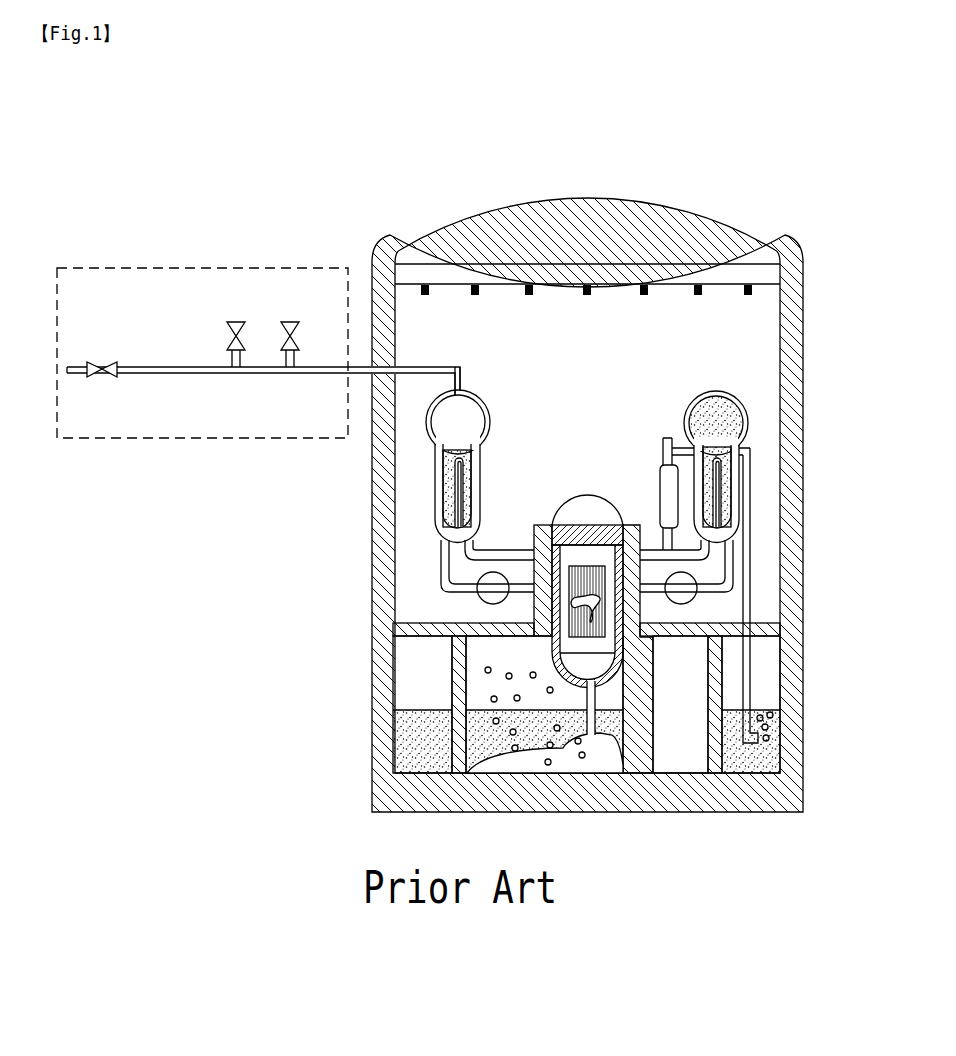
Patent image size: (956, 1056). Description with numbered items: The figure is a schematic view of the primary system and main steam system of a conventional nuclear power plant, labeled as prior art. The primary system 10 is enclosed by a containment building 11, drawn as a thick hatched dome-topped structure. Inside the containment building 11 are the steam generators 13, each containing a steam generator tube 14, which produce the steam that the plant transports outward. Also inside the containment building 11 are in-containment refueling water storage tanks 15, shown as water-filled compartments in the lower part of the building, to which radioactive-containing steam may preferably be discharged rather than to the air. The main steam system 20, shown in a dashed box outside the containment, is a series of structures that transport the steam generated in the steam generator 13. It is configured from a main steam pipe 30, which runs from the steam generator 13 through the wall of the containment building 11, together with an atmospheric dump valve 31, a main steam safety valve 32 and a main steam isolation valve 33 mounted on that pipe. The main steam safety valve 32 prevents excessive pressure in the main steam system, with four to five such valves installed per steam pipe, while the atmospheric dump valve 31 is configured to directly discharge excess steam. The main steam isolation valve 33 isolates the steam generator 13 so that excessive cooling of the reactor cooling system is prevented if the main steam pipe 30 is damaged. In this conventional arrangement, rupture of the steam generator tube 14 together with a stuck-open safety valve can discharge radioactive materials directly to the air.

The primary system 10 is at (770, 141).
The containment building 11 is at (670, 200).
The steam generator 13 is at (471, 400).
The steam generator tube 14 is at (466, 467).
The in-containment refueling water storage tank 15 is at (414, 681).
The main steam system 20 is at (98, 242).
The main steam pipe 30 is at (325, 375).
The atmospheric dump valve 31 is at (291, 320).
The main steam safety valve 32 is at (237, 320).
The main steam isolation valve 33 is at (101, 361).